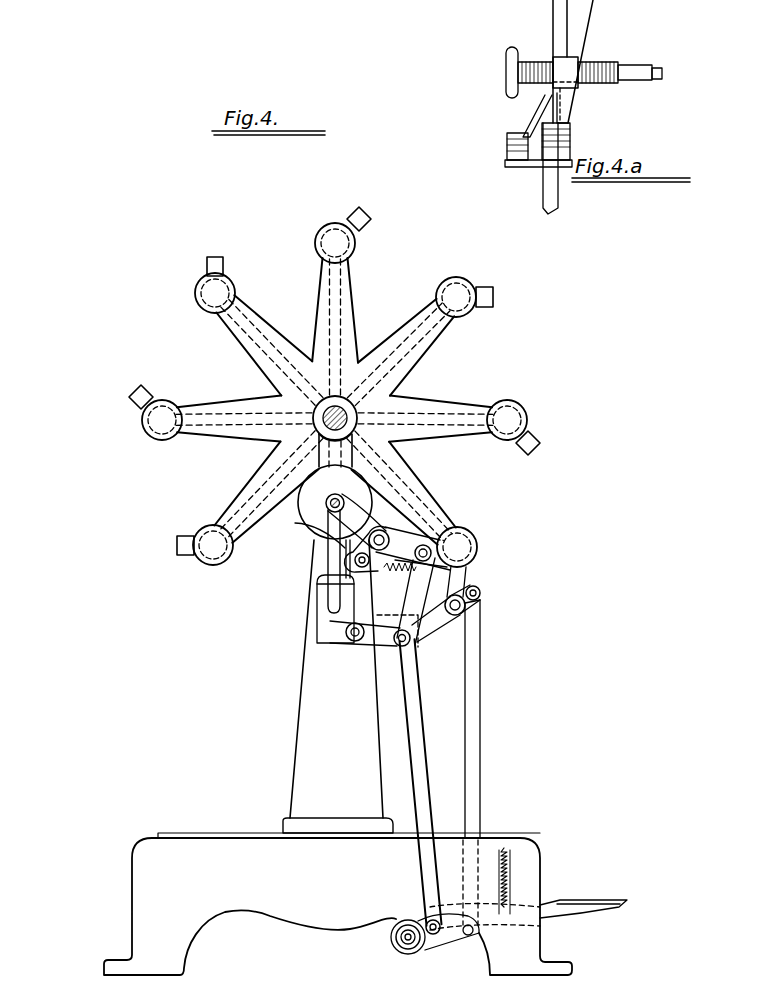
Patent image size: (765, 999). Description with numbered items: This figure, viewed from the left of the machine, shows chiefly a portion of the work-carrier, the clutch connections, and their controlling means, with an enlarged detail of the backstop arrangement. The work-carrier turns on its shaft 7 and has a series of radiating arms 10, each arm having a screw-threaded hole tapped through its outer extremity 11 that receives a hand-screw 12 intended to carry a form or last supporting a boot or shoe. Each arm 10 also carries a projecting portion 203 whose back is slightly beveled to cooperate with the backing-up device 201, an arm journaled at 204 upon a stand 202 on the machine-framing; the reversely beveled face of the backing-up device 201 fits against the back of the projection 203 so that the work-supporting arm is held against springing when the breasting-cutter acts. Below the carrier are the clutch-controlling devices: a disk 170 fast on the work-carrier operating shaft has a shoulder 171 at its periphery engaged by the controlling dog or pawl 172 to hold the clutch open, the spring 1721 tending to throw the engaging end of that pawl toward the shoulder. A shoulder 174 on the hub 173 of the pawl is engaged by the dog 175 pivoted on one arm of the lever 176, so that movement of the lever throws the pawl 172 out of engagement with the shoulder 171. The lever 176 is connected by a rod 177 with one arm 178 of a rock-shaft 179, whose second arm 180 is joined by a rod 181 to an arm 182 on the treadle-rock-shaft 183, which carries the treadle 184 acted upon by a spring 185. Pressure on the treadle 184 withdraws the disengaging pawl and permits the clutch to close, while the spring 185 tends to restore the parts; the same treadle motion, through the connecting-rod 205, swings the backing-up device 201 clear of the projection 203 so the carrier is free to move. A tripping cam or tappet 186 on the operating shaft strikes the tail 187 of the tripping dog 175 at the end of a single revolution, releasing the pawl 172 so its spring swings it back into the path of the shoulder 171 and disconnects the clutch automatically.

In FIG. 4, the shaft of the work-carrier 7 is at (400, 392).
In FIG. 4, the arm 10 is at (312, 279).
In FIG. 4A, the arm 10 is at (578, 18).
In FIG. 4A, the outer extremity 11 is at (568, 62).
In FIG. 4, the hand-screw 12 is at (337, 217).
In FIG. 4A, the hand-screw 12 is at (540, 54).
In FIG. 4, the disk 170 is at (267, 390).
In FIG. 4, the shoulder 171 is at (390, 493).
In FIG. 4, the controlling dog or pawl 172 is at (399, 517).
In FIG. 4, the hub of the dog or pawl 173 is at (395, 530).
In FIG. 4, the shoulder on the hub 174 is at (335, 502).
In FIG. 4, the dog 175 is at (322, 562).
In FIG. 4, the lever 176 is at (471, 570).
In FIG. 4, the rod 177 is at (472, 590).
In FIG. 4, the arm of the rock-shaft 178 is at (399, 652).
In FIG. 4, the rock-shaft 179 is at (372, 645).
In FIG. 4, the second arm 180 is at (470, 636).
In FIG. 4, the rod 181 is at (424, 748).
In FIG. 4, the arm 182 is at (432, 946).
In FIG. 4, the treadle-rock-shaft 183 is at (365, 976).
In FIG. 4, the treadle 184 is at (602, 892).
In FIG. 4, the spring 185 is at (517, 858).
In FIG. 4, the tripping cam or tappet 186 is at (398, 432).
In FIG. 4, the tail 187 is at (320, 536).
In FIG. 4, the backing-up device 201 is at (430, 548).
In FIG. 4A, the backing-up device 201 is at (534, 110).
In FIG. 4, the stand 202 is at (472, 642).
In FIG. 4A, the stand 202 is at (513, 176).
In FIG. 4, the projecting portion 203 is at (210, 249).
In FIG. 4A, the projecting portion 203 is at (570, 107).
In FIG. 4, the journal 204 is at (466, 614).
In FIG. 4, the connecting-rod 205 is at (489, 773).
In FIG. 4A, the connecting-rod 205 is at (568, 203).
In FIG. 4, the spring 1721 is at (325, 640).